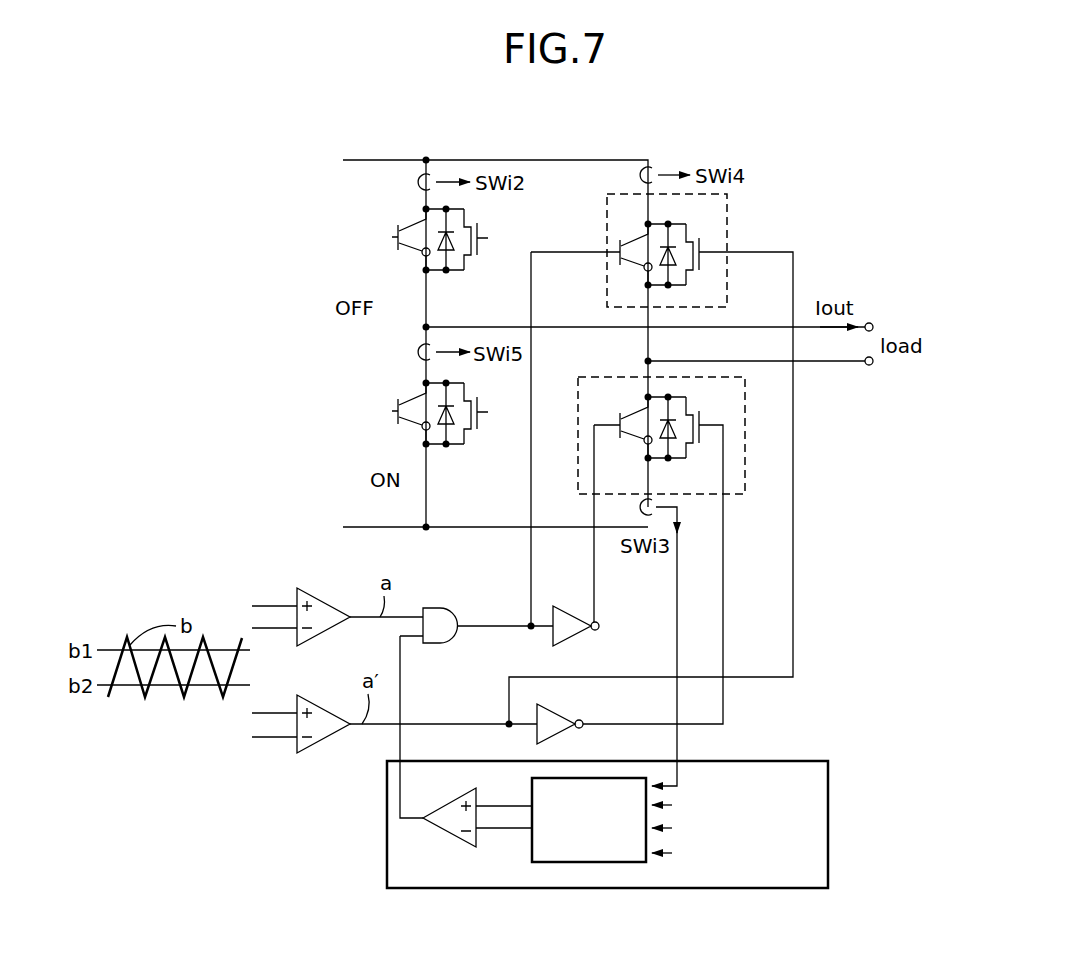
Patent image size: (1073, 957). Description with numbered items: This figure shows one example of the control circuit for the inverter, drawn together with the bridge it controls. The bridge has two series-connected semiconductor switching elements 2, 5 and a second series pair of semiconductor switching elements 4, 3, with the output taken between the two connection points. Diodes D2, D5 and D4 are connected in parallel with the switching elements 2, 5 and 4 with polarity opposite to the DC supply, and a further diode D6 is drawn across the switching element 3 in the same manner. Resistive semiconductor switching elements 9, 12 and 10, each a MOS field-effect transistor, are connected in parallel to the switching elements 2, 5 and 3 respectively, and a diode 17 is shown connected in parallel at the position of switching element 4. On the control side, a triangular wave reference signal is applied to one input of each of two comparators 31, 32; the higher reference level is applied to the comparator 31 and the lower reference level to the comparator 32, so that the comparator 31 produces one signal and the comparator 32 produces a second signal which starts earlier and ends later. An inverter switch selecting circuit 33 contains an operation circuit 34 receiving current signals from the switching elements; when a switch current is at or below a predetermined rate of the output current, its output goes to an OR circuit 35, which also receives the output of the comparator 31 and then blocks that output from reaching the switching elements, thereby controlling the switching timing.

The semiconductor switching element 2 is at (412, 224).
The semiconductor switching element 3 is at (637, 413).
The semiconductor switching element 4 is at (640, 242).
The semiconductor switching element 5 is at (412, 398).
The resistive semiconductor switching element 9 is at (488, 238).
The resistive semiconductor switching element 10 is at (700, 418).
The resistive semiconductor switching element 12 is at (488, 412).
The diode 17 is at (700, 243).
The diode D2 is at (447, 252).
The diode D4 is at (669, 267).
The diode D5 is at (447, 426).
The diode D6 is at (669, 440).
The comparator 31 is at (320, 632).
The comparator 32 is at (320, 738).
The inverter switch selecting circuit 33 is at (684, 791).
The operation circuit 34 is at (532, 855).
The OR circuit 35 is at (447, 620).